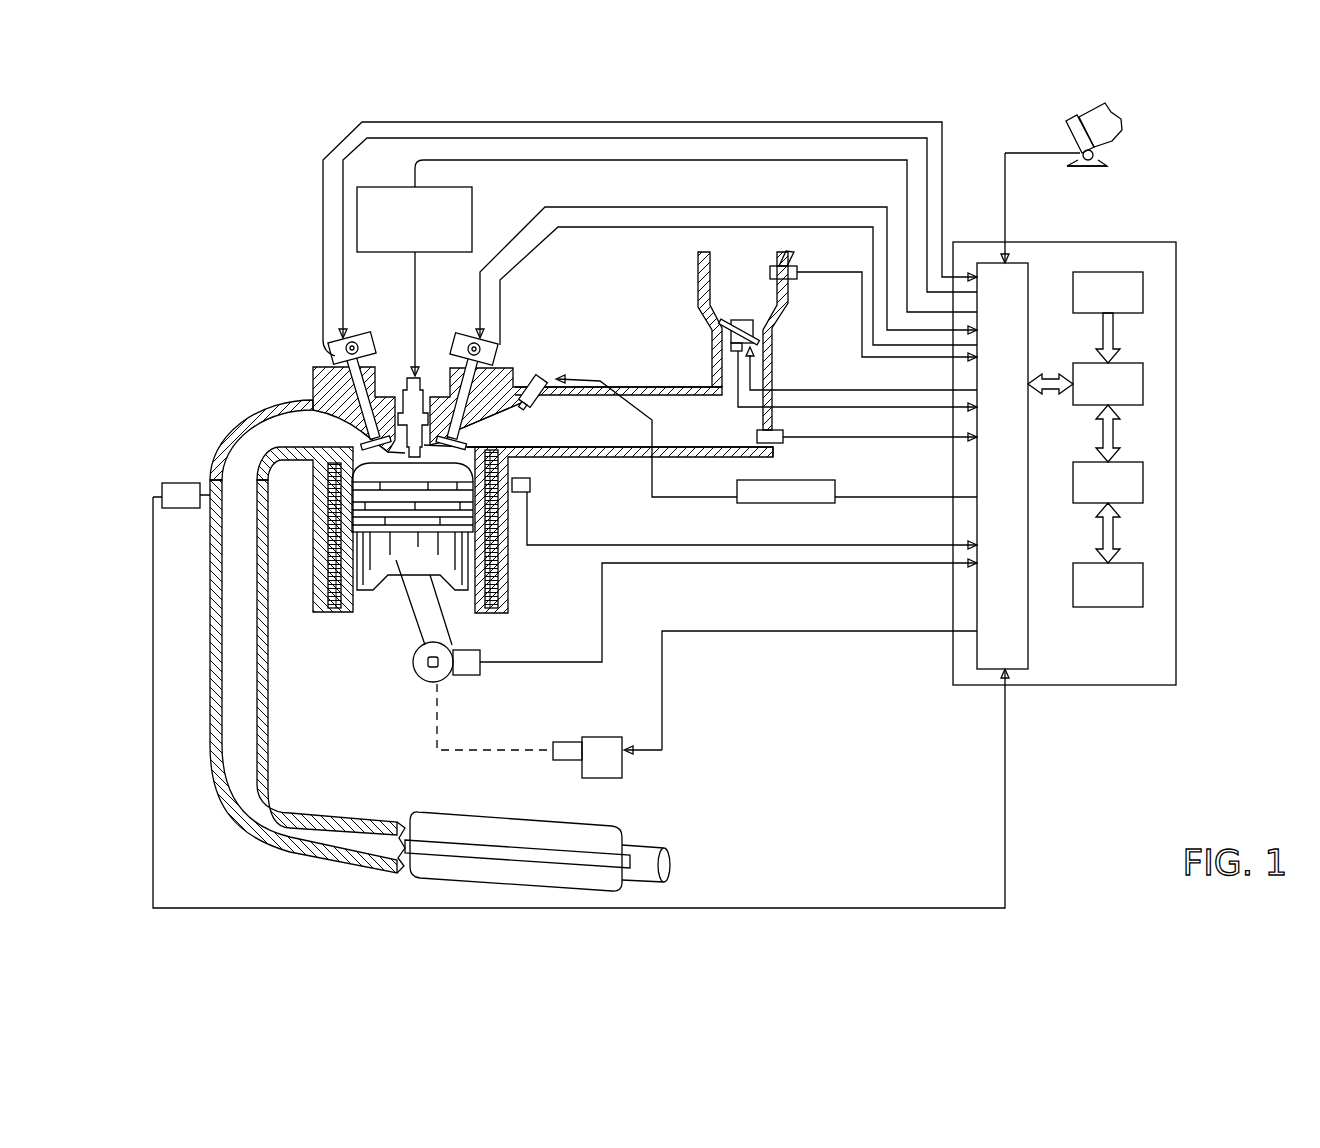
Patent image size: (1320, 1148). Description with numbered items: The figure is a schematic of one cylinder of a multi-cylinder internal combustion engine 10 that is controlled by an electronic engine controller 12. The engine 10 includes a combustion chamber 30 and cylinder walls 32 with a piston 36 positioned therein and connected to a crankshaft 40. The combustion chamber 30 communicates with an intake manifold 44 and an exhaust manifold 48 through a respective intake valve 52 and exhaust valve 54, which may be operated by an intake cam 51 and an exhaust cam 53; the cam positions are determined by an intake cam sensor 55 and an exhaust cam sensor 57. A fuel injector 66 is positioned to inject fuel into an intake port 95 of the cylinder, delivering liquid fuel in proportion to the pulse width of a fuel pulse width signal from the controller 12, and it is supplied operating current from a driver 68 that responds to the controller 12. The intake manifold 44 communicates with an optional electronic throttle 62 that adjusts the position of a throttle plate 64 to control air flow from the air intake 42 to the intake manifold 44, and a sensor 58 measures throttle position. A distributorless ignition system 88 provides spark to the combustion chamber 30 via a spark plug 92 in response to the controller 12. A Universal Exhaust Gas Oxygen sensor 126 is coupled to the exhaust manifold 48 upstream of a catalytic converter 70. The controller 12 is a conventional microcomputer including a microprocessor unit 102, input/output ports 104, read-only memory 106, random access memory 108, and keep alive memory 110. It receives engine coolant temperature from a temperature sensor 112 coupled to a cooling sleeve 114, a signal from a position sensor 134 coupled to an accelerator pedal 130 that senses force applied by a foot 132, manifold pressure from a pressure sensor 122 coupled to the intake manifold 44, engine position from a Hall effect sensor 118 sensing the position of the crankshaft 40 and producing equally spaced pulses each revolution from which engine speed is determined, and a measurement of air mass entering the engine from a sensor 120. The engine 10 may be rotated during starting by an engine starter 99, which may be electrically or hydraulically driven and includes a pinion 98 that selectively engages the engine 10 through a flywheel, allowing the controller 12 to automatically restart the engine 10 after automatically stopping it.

The internal combustion engine 10 is at (252, 324).
The electronic engine controller 12 is at (1109, 448).
The combustion chamber 30 is at (412, 465).
The cylinder walls 32 is at (515, 559).
The piston 36 is at (397, 562).
The crankshaft 40 is at (420, 678).
The air intake 42 is at (729, 297).
The intake manifold 44 is at (668, 434).
The exhaust manifold 48 is at (271, 440).
The intake cam 51 is at (473, 337).
The intake valve 52 is at (470, 430).
The exhaust cam 53 is at (357, 338).
The exhaust valve 54 is at (318, 400).
The intake cam sensor 55 is at (488, 360).
The exhaust cam sensor 57 is at (343, 352).
The throttle position sensor 58 is at (730, 348).
The electronic throttle 62 is at (818, 365).
The throttle plate 64 is at (720, 324).
The fuel injector 66 is at (541, 378).
The driver 68 is at (760, 504).
The catalytic converter 70 is at (428, 815).
The distributorless ignition system 88 is at (372, 187).
The spark plug 92 is at (420, 376).
The intake port 95 is at (465, 442).
The pinion 98 is at (570, 742).
The engine starter 99 is at (612, 778).
The microprocessor unit 102 is at (1145, 382).
The input/output ports 104 is at (1030, 273).
The read-only memory 106 is at (1145, 292).
The random access memory 108 is at (1145, 482).
The keep alive memory 110 is at (1145, 585).
The temperature sensor 112 is at (515, 492).
The cooling sleeve 114 is at (493, 560).
The Hall effect sensor 118 is at (462, 676).
The air mass sensor 120 is at (793, 262).
The pressure sensor 122 is at (780, 445).
The Universal Exhaust Gas Oxygen (UEGO) sensor 126 is at (552, 686).
The accelerator pedal 130 is at (1120, 172).
The foot 132 is at (1120, 113).
The position sensor 134 is at (1105, 160).